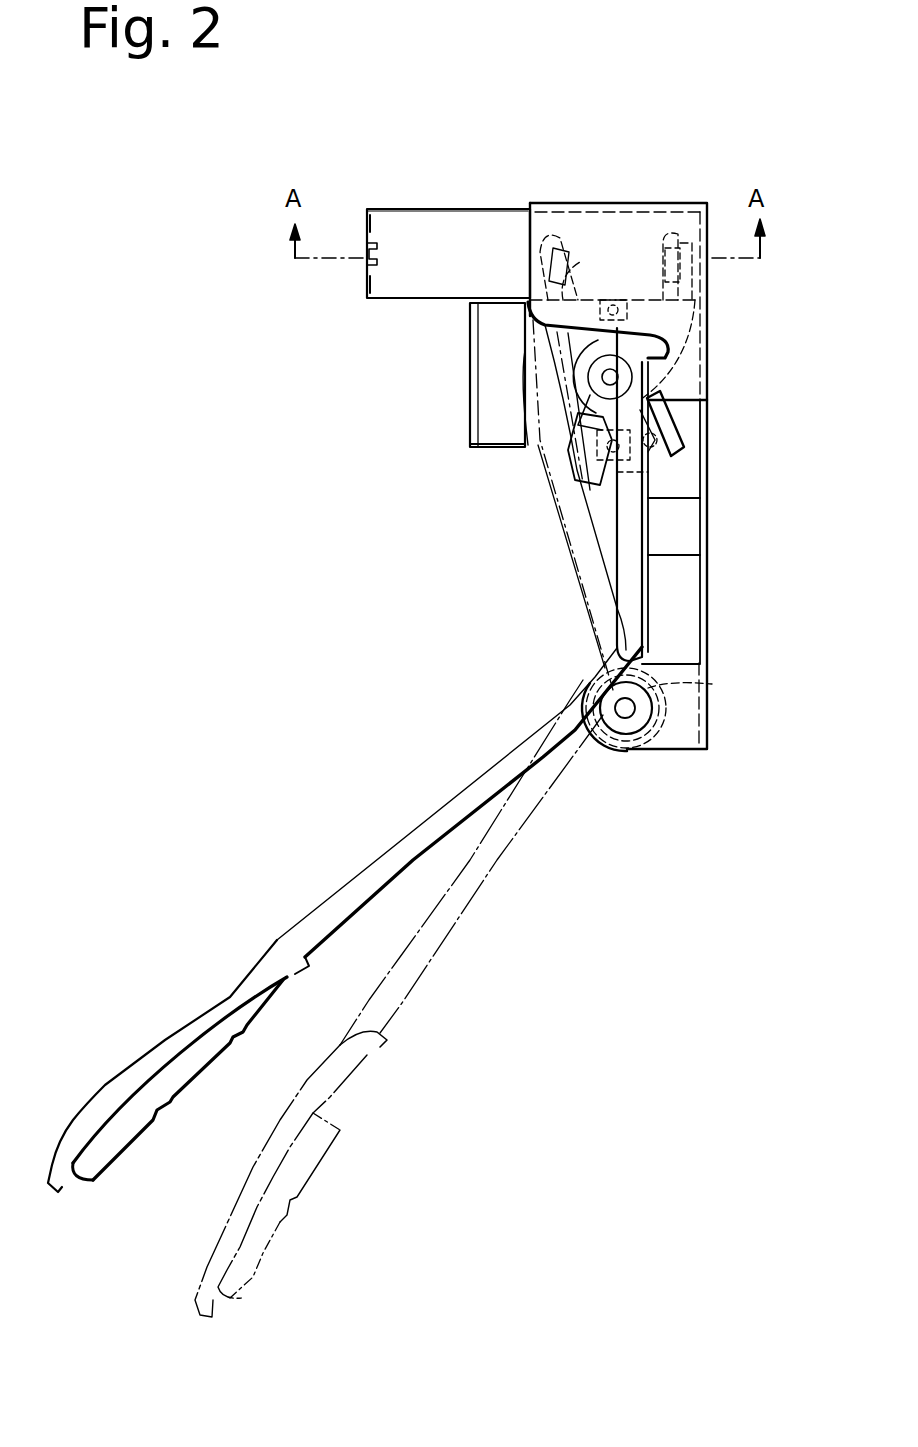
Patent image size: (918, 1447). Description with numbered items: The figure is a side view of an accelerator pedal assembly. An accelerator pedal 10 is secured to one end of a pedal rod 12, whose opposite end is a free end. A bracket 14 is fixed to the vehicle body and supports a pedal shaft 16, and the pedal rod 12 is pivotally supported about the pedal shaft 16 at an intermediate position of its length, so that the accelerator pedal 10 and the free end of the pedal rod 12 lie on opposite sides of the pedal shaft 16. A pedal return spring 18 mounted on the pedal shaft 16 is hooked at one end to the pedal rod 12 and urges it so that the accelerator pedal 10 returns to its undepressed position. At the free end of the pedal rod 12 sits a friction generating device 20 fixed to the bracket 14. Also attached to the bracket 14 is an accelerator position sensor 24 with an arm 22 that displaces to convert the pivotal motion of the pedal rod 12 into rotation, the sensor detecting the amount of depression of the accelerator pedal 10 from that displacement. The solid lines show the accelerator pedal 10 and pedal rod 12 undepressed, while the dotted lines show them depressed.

The accelerator pedal 10 is at (247, 1183).
The pedal rod 12 is at (447, 897).
The bracket 14 is at (711, 568).
The pedal shaft 16 is at (633, 710).
The pedal return spring 18 is at (712, 684).
The friction generating device 20 is at (486, 208).
The arm 22 is at (682, 426).
The accelerator position sensor 24 is at (490, 386).